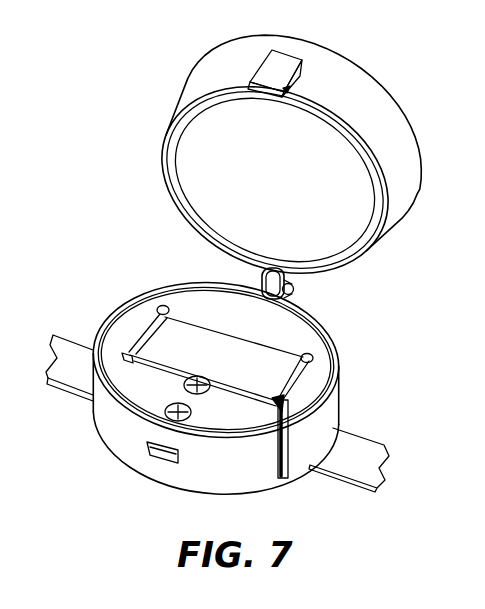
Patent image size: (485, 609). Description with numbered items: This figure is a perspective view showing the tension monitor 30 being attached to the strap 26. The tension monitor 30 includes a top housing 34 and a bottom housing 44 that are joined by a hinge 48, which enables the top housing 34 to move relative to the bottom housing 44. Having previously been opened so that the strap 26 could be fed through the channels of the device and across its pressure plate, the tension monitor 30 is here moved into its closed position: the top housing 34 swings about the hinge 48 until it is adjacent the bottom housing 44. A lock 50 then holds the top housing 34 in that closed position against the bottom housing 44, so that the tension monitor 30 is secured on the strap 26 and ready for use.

The strap 26 is at (77, 353).
The tension monitor 30 is at (290, 155).
The top housing 34 is at (208, 157).
The bottom housing 44 is at (338, 390).
The hinge 48 is at (296, 294).
The lock 50 is at (284, 62).